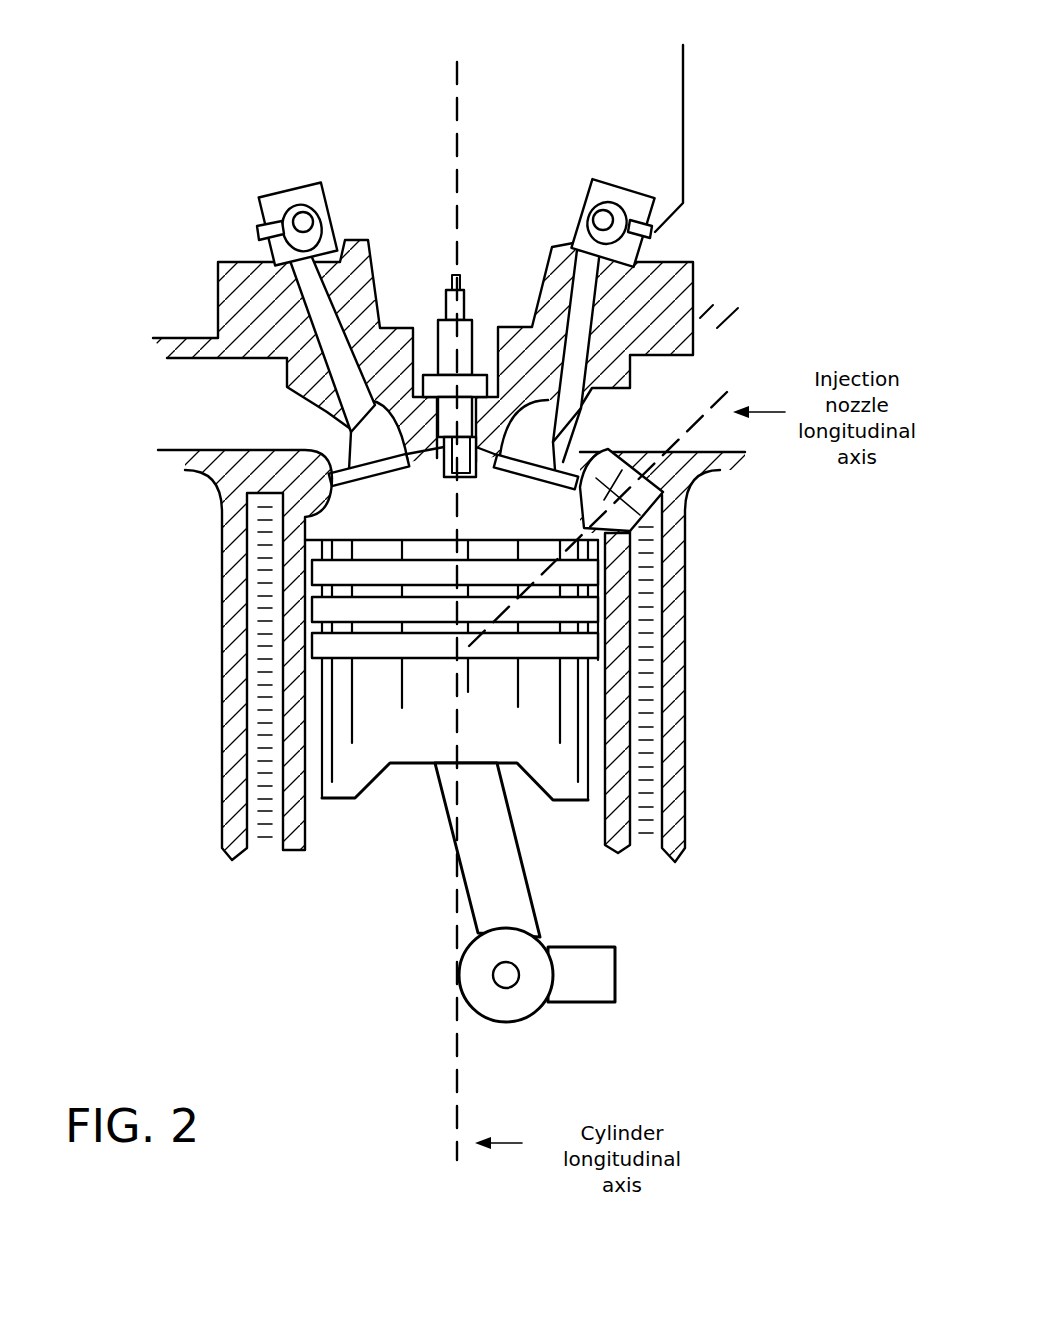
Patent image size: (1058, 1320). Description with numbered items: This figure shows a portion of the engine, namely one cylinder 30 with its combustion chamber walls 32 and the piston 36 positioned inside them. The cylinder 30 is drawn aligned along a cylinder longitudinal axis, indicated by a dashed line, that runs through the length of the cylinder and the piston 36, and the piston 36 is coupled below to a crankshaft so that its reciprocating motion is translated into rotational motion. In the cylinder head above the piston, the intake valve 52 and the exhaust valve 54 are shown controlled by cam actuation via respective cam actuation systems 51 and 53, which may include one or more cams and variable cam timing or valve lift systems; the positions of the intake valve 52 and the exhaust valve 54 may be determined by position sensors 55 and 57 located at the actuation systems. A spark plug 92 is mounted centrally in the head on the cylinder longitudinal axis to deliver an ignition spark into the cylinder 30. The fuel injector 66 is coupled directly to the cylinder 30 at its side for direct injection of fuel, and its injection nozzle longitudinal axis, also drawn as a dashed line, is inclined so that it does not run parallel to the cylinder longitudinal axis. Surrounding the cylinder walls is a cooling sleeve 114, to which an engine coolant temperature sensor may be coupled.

The cylinder 30 is at (450, 497).
The combustion chamber walls 32 is at (307, 812).
The piston 36 is at (418, 732).
The cam actuation system 51 is at (600, 215).
The intake valve 52 is at (533, 443).
The cam actuation system 53 is at (305, 208).
The exhaust valve 54 is at (357, 440).
The position sensor 55 is at (655, 232).
The position sensor 57 is at (260, 235).
The fuel injector 66 is at (608, 455).
The spark plug 92 is at (450, 350).
The cooling sleeve 114 is at (645, 737).